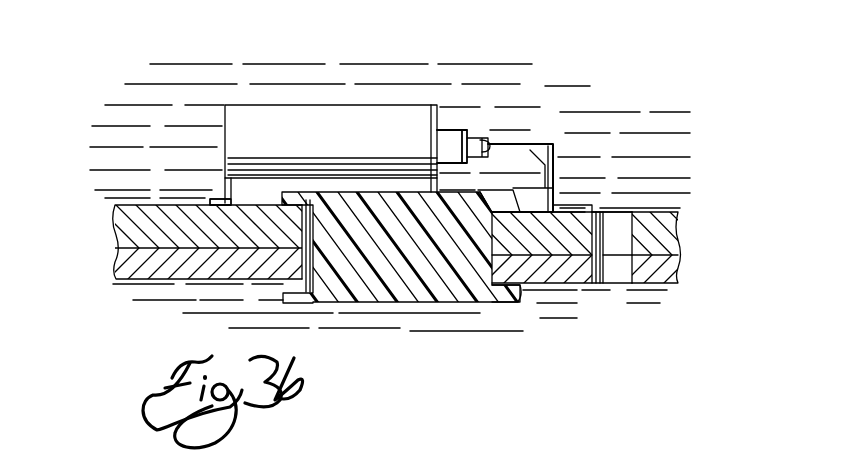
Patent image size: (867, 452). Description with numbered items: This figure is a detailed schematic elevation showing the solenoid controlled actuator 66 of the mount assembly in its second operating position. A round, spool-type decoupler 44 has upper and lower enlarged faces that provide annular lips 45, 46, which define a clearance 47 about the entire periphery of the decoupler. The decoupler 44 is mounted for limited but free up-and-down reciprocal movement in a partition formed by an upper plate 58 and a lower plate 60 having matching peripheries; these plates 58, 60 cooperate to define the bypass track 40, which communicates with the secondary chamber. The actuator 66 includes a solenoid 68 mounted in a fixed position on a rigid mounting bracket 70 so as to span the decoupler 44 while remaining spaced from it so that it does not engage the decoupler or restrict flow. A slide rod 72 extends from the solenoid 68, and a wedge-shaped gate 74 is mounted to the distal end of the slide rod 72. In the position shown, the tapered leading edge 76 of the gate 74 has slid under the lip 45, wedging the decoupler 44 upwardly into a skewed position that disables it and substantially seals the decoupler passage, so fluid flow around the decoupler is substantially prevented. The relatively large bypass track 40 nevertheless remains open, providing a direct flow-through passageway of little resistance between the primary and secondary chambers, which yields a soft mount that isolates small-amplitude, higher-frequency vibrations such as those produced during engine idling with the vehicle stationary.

The bypass track 40 is at (613, 273).
The decoupler 44 is at (442, 283).
The upper annular lip 45 is at (486, 204).
The lower annular lip 46 is at (522, 287).
The clearance 47 is at (430, 257).
The upper plate 58 is at (655, 238).
The lower plate 60 is at (660, 270).
The solenoid controlled actuator 66 is at (486, 111).
The solenoid 68 is at (308, 143).
The mounting bracket 70 is at (224, 190).
The slide rod 72 is at (515, 190).
The gate 74 is at (562, 198).
The tapered leading edge 76 is at (556, 146).